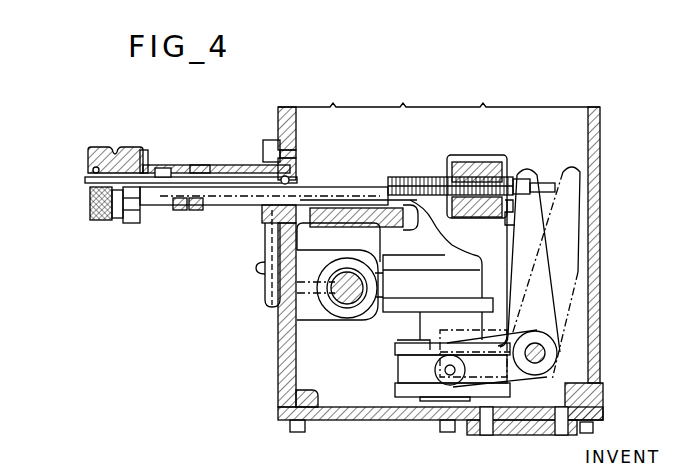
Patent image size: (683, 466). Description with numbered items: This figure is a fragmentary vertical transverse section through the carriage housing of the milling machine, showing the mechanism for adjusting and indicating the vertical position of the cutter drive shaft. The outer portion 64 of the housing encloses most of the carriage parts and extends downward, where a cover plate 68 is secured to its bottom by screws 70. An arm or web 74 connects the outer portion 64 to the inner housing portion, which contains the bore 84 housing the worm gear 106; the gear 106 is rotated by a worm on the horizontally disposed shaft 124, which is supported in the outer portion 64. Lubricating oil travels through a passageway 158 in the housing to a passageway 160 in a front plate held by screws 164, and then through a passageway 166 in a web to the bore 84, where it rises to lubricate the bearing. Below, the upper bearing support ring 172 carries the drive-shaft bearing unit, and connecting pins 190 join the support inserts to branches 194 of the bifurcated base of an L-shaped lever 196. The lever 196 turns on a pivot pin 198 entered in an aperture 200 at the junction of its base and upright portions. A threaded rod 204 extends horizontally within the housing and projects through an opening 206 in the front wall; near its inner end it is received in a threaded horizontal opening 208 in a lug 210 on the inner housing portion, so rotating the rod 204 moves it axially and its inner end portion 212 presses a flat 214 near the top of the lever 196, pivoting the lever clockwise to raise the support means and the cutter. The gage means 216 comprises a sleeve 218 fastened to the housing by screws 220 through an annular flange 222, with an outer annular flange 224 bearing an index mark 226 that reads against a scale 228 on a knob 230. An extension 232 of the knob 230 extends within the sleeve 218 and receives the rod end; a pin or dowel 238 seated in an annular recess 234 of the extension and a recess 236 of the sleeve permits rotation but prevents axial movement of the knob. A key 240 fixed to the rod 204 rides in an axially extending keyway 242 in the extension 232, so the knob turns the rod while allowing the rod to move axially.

The outer portion of carriage housing 64 is at (597, 223).
The cover plate 68 is at (279, 409).
The screws 70 is at (295, 433).
The arm or web 74 is at (401, 263).
The bore 84 is at (338, 242).
The worm gear 106 is at (440, 266).
The horizontally disposed shaft 124 is at (350, 300).
The passageway 158 is at (284, 320).
The passageway 160 is at (272, 288).
The screws 164 is at (258, 268).
The passageway 166 is at (322, 222).
The upper bearing support ring 172 is at (417, 340).
The connecting pins 190 is at (397, 370).
The branches 194 is at (491, 377).
The L-shaped lever 196 is at (507, 283).
The pivot pin 198 is at (545, 373).
The aperture 200 is at (538, 340).
The threaded rod 204 is at (358, 180).
The opening 206 is at (298, 165).
The threaded horizontal opening 208 is at (477, 160).
The lug 210 is at (470, 160).
The inner end portion of rod 212 is at (510, 177).
The flat 214 is at (512, 227).
The gage means 216 is at (112, 227).
The sleeve 218 is at (178, 160).
The screws 220 is at (263, 226).
The annular flange 222 is at (273, 143).
The annular flange 224 is at (147, 150).
The index mark 226 is at (145, 217).
The scale 228 is at (132, 227).
The knob 230 is at (95, 205).
The extension 232 is at (195, 170).
The annular recess 234 is at (264, 195).
The recess 236 is at (192, 210).
The pin or dowel 238 is at (183, 210).
The key 240 is at (93, 165).
The keyway 242 is at (161, 167).